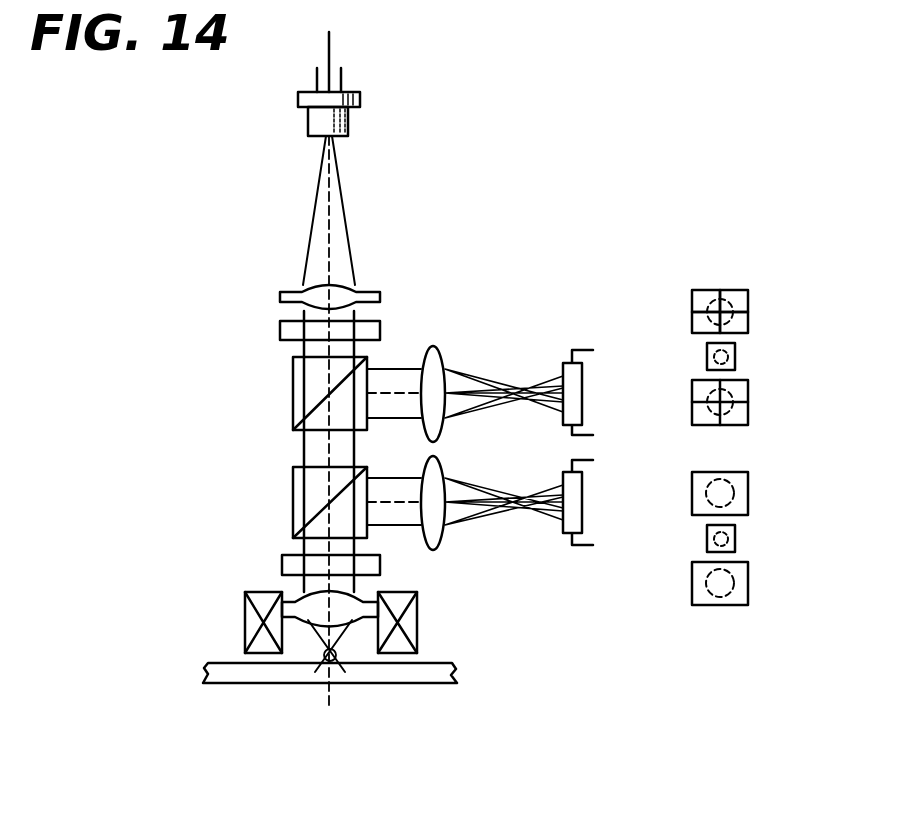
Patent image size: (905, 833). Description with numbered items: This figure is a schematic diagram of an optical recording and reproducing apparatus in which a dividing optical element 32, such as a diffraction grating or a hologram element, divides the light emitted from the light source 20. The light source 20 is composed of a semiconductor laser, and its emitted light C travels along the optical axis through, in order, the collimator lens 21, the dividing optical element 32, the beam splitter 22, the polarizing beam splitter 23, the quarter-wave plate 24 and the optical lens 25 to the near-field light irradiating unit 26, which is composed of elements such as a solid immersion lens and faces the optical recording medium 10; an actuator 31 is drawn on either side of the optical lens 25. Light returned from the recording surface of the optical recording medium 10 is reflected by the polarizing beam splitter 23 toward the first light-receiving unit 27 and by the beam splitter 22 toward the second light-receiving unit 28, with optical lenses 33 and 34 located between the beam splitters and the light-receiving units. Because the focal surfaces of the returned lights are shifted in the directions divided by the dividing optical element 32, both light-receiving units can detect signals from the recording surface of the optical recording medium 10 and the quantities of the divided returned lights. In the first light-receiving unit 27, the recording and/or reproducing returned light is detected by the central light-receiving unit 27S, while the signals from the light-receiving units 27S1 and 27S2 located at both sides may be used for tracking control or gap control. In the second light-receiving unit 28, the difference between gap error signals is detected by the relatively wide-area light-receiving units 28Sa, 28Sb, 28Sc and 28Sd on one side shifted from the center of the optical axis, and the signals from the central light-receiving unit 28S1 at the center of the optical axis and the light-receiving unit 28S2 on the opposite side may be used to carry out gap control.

The optical recording medium 10 is at (442, 687).
The light source 20 is at (372, 116).
The laser beam C is at (330, 195).
The collimator lens 21 is at (388, 302).
The dividing optical element 32 is at (268, 332).
The beam splitter 22 is at (280, 412).
The polarizing beam splitter 23 is at (280, 482).
The optical lens 33 is at (445, 356).
The optical lens 34 is at (445, 466).
The second light-receiving unit 28 is at (562, 352).
The first light-receiving unit 27 is at (566, 548).
The quarter-wave plate 24 is at (385, 566).
The optical lens 25 is at (300, 592).
The actuator coil 31 is at (417, 630).
The near-field light irradiating unit 26 is at (353, 653).
The light-receiving unit 28Sa is at (708, 290).
The light-receiving unit 28Sb is at (692, 318).
The light-receiving unit 28Sc is at (750, 322).
The light-receiving unit 28Sd is at (750, 300).
The central light-receiving unit 28S1 is at (745, 358).
The light-receiving unit 28S2 is at (760, 395).
The light-receiving unit 27S1 is at (765, 490).
The central light-receiving unit 27S is at (745, 540).
The light-receiving unit 27S2 is at (760, 585).